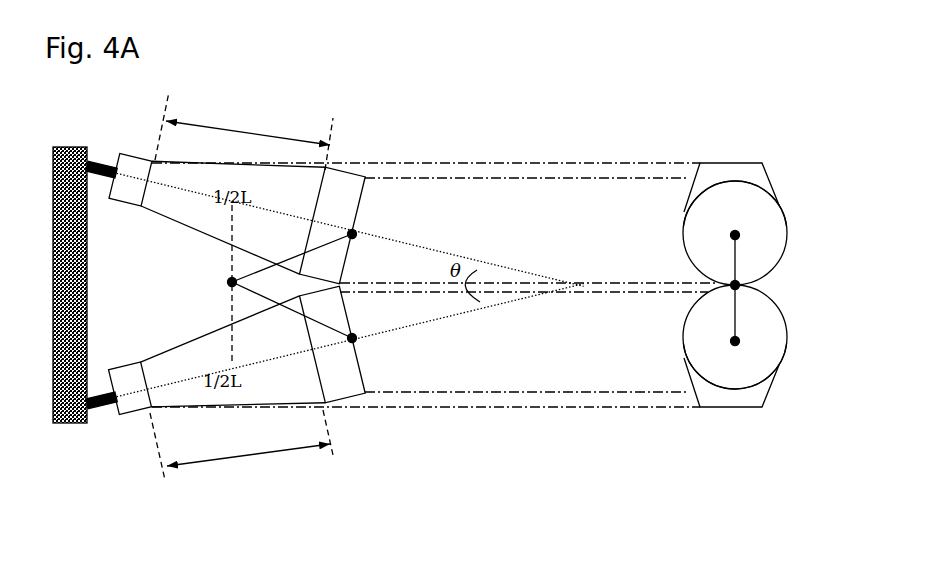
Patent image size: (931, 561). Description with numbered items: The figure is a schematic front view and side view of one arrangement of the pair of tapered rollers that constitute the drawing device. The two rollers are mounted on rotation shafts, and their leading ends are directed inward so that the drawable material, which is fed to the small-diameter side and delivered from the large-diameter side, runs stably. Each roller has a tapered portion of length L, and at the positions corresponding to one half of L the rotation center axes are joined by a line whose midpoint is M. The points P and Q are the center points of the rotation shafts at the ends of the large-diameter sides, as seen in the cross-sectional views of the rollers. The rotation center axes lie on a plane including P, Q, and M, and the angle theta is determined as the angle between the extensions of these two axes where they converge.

The center point of rotation shaft P is at (544, 228).
The center point of rotation shaft Q is at (550, 350).
The midpoint M is at (481, 286).
The length of the tapered portions L is at (241, 286).